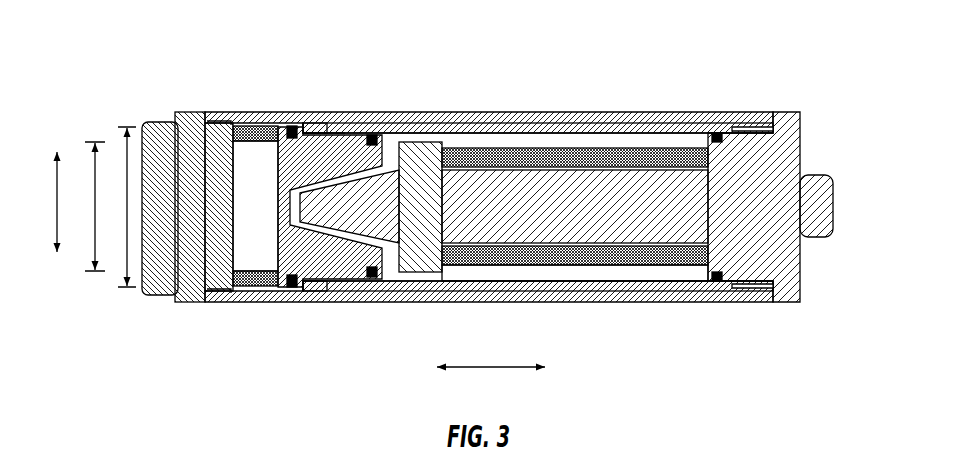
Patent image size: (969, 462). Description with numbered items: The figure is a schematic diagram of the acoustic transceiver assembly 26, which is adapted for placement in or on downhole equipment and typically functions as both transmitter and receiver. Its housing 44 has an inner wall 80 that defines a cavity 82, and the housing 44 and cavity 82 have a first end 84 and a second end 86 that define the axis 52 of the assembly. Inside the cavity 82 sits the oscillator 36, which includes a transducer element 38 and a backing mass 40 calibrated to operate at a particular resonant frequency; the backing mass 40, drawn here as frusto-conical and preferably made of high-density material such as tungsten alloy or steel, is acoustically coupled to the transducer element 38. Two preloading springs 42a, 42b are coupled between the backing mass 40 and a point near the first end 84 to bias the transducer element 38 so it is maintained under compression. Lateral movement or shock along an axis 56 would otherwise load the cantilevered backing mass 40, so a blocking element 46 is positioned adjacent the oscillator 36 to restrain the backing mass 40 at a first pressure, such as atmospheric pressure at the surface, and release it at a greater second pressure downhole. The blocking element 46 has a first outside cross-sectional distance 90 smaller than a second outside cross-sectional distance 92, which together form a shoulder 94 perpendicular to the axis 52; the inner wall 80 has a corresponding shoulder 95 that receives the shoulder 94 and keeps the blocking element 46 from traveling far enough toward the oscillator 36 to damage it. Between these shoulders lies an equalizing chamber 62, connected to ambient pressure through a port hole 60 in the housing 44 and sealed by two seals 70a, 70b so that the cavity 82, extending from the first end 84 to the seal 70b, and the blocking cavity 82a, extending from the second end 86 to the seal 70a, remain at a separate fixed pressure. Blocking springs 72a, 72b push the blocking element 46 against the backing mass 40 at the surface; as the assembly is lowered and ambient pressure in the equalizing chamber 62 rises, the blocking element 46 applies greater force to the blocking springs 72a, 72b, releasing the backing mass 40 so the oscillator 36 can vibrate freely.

The acoustic transceiver assembly 26 is at (800, 74).
The oscillator 36 is at (517, 145).
The transducer element 38 is at (673, 172).
The backing mass 40 is at (418, 142).
The preloading spring 42a is at (650, 265).
The preloading spring 42b is at (627, 152).
The housing 44 is at (561, 112).
The blocking element 46 is at (401, 112).
The axis 52 is at (491, 382).
The axis 56 is at (45, 202).
The port hole 60 is at (313, 122).
The equalizing chamber 62 is at (310, 122).
The seal 70a is at (292, 303).
The seal 70b is at (371, 278).
The blocking spring 72a is at (252, 284).
The blocking spring 72b is at (250, 128).
The inner wall 80 is at (688, 300).
The cavity 82 is at (611, 272).
The blocking cavity 82a is at (260, 255).
The first end 84 is at (800, 158).
The second end 86 is at (127, 273).
The first outside cross-sectional distance 90 is at (95, 165).
The second outside cross-sectional distance 92 is at (127, 135).
The shoulder 94 is at (317, 290).
The shoulder 95 is at (338, 120).